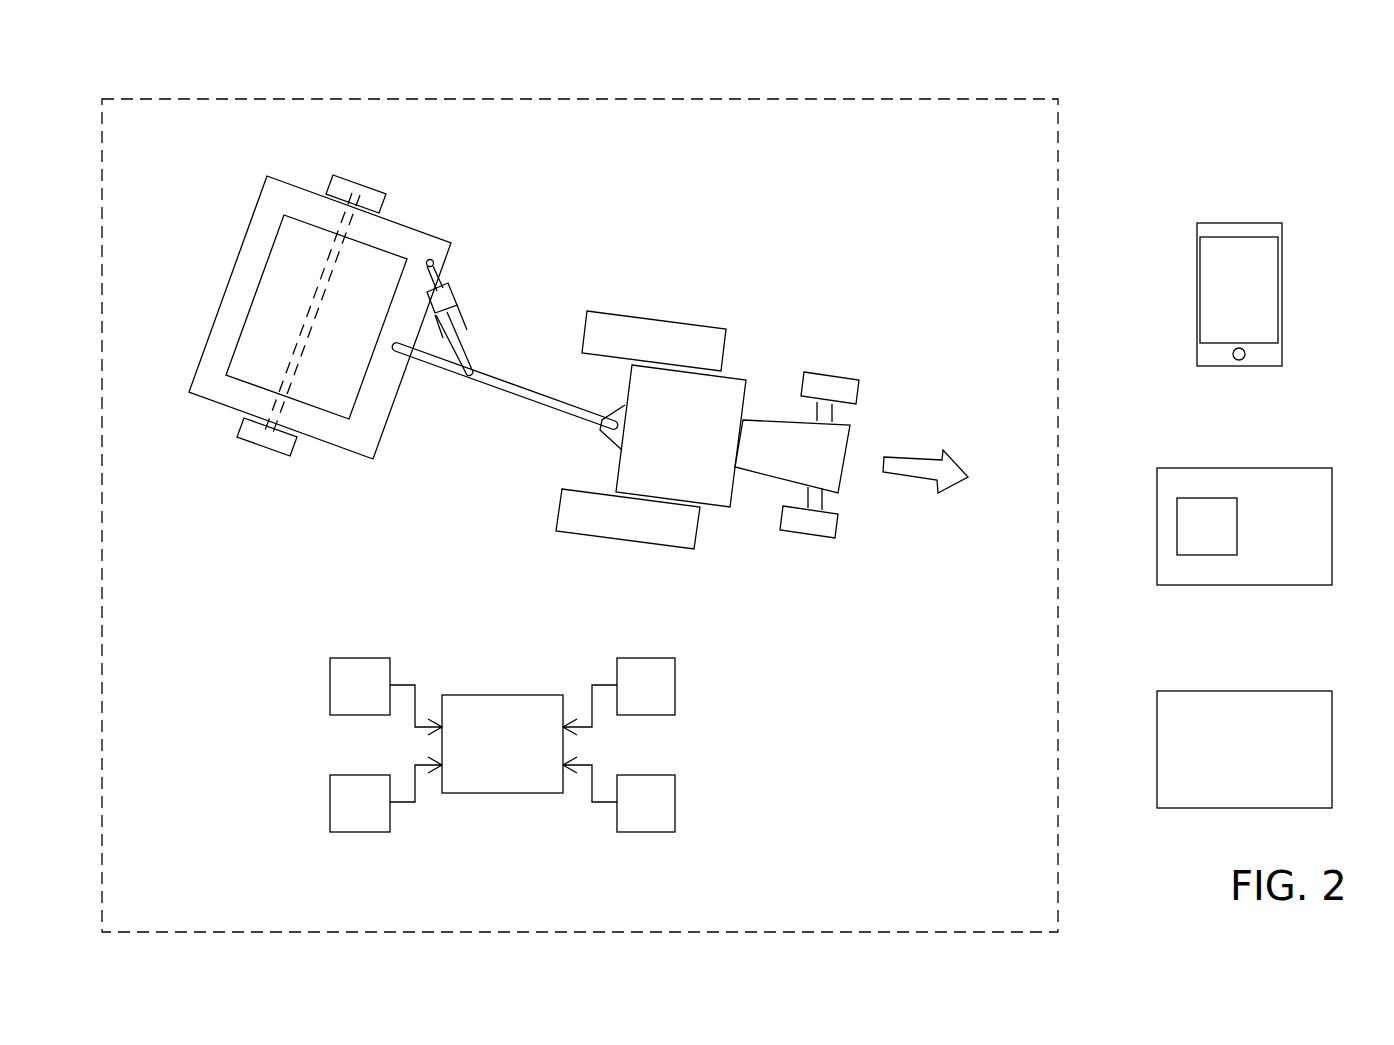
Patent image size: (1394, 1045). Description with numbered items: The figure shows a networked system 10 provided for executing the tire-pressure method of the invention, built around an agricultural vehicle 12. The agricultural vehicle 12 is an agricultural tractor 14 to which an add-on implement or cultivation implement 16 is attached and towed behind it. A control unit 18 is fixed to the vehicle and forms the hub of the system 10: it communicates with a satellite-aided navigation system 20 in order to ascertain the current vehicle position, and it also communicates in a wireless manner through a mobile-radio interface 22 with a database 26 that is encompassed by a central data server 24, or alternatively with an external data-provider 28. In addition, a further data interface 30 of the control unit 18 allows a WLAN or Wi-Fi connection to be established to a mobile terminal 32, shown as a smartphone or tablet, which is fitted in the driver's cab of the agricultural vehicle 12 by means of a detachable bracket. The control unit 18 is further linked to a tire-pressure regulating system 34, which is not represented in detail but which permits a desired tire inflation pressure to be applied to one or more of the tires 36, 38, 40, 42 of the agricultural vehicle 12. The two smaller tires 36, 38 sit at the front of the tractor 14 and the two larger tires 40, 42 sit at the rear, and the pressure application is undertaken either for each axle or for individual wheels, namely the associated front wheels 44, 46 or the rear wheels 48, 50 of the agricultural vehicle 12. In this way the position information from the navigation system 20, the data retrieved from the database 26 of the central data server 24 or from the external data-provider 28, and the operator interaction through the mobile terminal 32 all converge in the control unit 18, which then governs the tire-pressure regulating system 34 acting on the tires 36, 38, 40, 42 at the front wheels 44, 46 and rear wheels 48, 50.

The networked system 10 is at (1192, 70).
The agricultural vehicle 12 is at (510, 115).
The agricultural tractor 14 is at (830, 442).
The cultivation implement 16 is at (342, 452).
The control unit 18 is at (518, 758).
The satellite-aided navigation system 20 is at (375, 696).
The mobile-radio interface 22 is at (661, 696).
The central data server 24 is at (1290, 468).
The database 26 is at (1221, 537).
The external data-provider 28 is at (1283, 691).
The further data interface 30 is at (661, 813).
The mobile terminal 32 is at (1283, 277).
The tire-pressure regulating system 34 is at (375, 813).
The tire 36 is at (815, 385).
The tire 38 is at (800, 523).
The tire 40 is at (693, 348).
The tire 42 is at (673, 523).
The front wheel 44 is at (853, 360).
The front wheel 46 is at (825, 558).
The rear wheel 48 is at (648, 295).
The rear wheel 50 is at (608, 558).